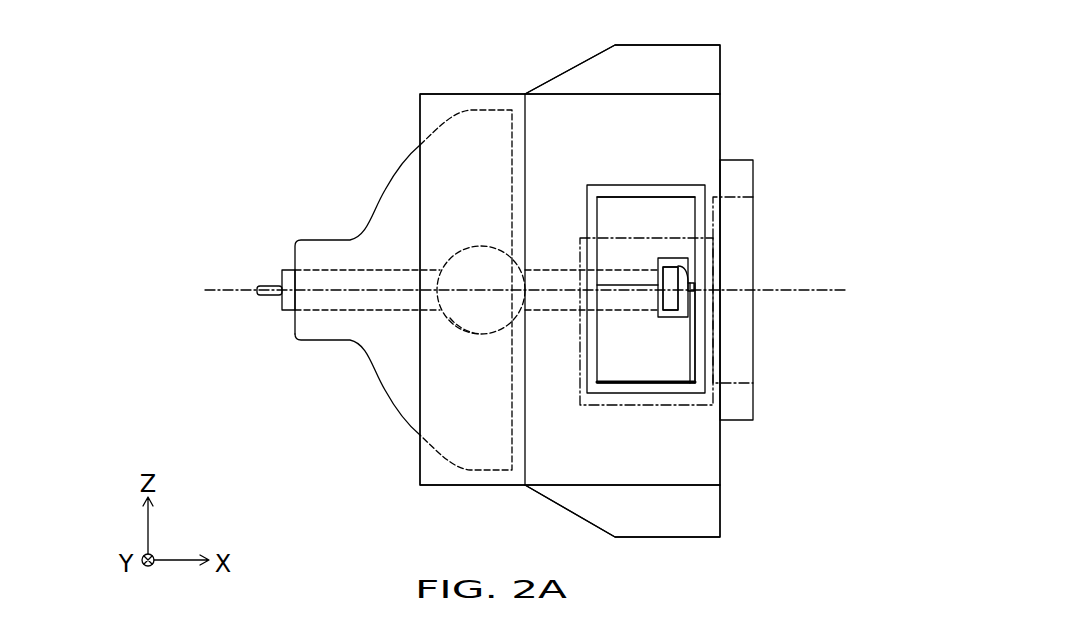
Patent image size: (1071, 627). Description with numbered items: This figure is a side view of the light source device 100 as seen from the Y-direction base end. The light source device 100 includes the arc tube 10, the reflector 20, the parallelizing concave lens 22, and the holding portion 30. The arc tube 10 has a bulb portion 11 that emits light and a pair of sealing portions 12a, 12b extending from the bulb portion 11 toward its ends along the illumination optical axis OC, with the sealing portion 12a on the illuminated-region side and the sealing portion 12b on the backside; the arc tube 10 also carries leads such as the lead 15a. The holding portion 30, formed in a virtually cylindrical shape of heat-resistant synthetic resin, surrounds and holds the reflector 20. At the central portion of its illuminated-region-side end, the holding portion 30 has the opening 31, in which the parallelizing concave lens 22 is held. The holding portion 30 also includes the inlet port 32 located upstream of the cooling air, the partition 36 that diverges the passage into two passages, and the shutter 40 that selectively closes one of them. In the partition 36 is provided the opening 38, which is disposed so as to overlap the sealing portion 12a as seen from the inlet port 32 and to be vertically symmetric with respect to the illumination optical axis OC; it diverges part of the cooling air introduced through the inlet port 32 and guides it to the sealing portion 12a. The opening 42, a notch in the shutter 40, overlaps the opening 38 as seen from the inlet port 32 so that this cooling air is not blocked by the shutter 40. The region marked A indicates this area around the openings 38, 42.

The light source device 100 is at (786, 47).
The holding portion 30 is at (472, 93).
The reflector 20 is at (388, 180).
The sealing portion 12b is at (293, 268).
The arc tube 10 is at (472, 240).
The bulb portion 11 is at (472, 335).
The inlet port 32 is at (617, 197).
The partition 36 is at (646, 205).
The lead 15a is at (676, 268).
The sealing portion 12a is at (660, 300).
The opening 38 is at (690, 270).
The opening 42 is at (695, 307).
The shutter 40 is at (687, 340).
The opening 31 is at (745, 203).
The parallelizing concave lens 22 is at (740, 383).
The region A is at (652, 407).
The illumination optical axis OC is at (808, 289).